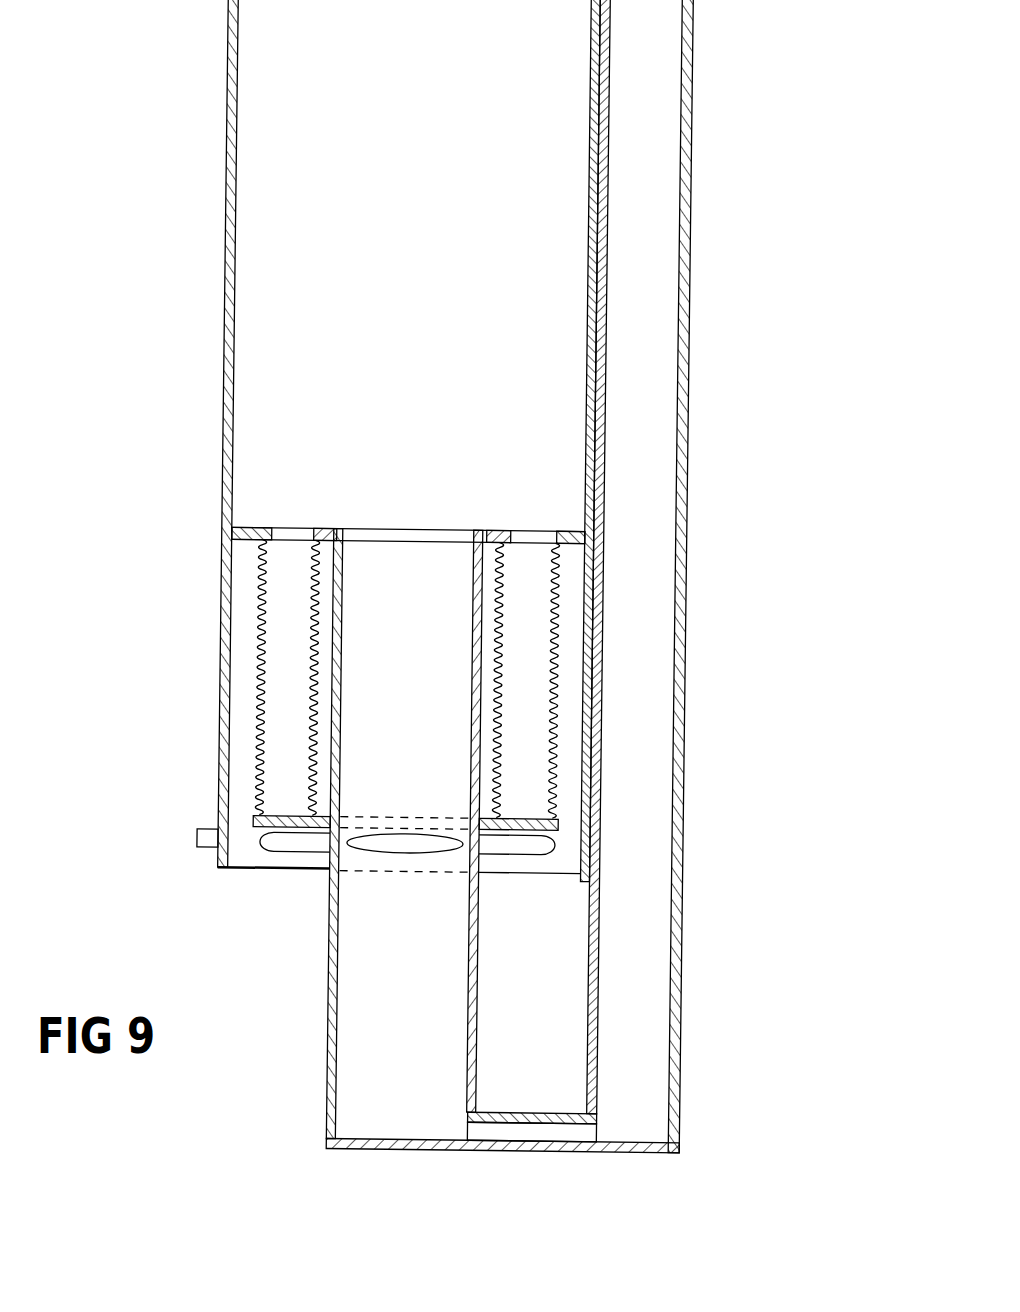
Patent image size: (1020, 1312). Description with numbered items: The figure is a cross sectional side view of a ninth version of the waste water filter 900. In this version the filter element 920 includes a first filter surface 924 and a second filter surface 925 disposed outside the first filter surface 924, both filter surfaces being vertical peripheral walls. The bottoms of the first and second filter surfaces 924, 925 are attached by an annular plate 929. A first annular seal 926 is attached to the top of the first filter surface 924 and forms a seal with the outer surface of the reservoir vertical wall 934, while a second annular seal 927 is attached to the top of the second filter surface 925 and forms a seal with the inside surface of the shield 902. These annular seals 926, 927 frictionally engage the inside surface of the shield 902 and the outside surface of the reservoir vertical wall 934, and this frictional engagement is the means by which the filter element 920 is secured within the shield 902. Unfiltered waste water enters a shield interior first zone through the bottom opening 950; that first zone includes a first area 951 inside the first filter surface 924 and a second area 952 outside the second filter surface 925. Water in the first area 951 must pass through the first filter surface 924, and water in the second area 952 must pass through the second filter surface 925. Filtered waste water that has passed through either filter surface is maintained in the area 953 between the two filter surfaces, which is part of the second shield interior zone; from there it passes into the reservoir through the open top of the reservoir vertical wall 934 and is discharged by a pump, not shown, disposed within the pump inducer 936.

The waste water filter 900 is at (205, 286).
The shield 902 is at (223, 393).
The filter element 920 is at (250, 673).
The first filter surface 924 is at (310, 573).
The second filter surface 925 is at (262, 568).
The first annular seal 926 is at (320, 528).
The second annular seal 927 is at (252, 528).
The annular plate 929 is at (552, 828).
The reservoir vertical wall 934 is at (328, 1057).
The pump inducer 936 is at (682, 1077).
The bottom opening 950 is at (278, 858).
The first area 951 is at (490, 625).
The second area 952 is at (567, 717).
The area between the two filter surfaces 953 is at (530, 742).